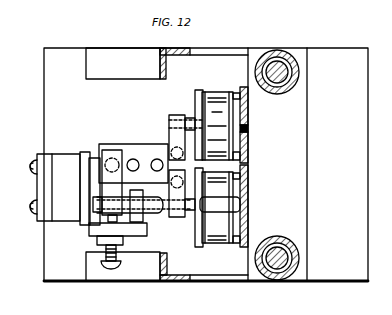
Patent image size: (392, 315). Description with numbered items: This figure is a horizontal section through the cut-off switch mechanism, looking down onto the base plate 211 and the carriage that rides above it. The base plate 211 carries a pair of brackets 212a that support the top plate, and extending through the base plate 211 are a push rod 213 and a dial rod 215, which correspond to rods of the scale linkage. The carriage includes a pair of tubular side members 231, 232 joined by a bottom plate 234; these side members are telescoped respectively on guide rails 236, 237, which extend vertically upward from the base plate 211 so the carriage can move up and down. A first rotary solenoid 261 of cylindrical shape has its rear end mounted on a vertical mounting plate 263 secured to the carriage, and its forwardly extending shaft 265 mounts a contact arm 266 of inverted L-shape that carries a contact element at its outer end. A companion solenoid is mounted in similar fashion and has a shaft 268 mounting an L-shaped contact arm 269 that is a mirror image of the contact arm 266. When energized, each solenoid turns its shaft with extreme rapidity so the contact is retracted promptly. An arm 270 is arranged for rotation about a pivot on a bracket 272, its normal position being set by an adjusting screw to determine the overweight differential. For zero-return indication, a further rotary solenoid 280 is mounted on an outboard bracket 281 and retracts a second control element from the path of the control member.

The base plate 211 is at (346, 49).
The brackets 212a is at (130, 53).
The push rod 213 is at (134, 158).
The dial rod 215 is at (156, 158).
The tubular side member 231 is at (292, 278).
The tubular side member 232 is at (286, 52).
The bottom plate 234 is at (306, 112).
The guide rail 236 is at (276, 276).
The guide rail 237 is at (271, 52).
The rotary solenoid 261 is at (218, 93).
The mounting plate 263 is at (251, 113).
The shaft 265 is at (196, 112).
The contact arm 266 is at (171, 114).
The shaft 268 is at (190, 214).
The contact arm 269 is at (252, 191).
The arm 270 is at (106, 149).
The bracket 272 is at (217, 212).
The rotary solenoid 280 is at (68, 153).
The outboard bracket 281 is at (33, 183).